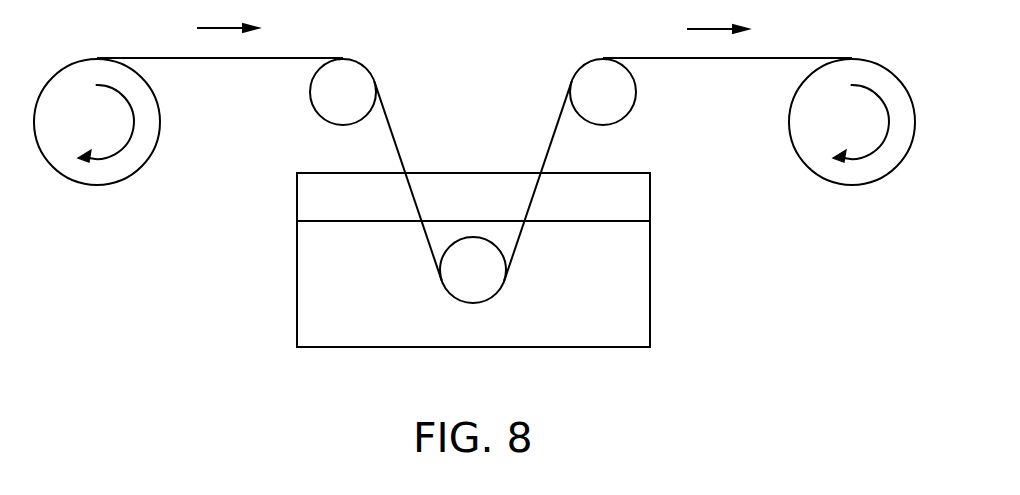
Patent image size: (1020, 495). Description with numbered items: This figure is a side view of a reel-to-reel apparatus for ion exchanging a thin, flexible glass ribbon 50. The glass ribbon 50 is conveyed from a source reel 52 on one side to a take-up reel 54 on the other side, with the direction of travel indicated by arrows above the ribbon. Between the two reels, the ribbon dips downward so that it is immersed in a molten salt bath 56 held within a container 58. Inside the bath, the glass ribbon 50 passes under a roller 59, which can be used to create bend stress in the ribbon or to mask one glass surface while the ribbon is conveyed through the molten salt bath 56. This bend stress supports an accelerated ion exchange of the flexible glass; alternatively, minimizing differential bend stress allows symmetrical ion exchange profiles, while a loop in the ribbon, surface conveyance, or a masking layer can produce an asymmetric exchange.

The glass ribbon 50 is at (387, 109).
The source reel 52 is at (97, 185).
The take-up reel 54 is at (850, 185).
The molten salt bath 56 is at (650, 285).
The container 58 is at (297, 198).
The roller 59 is at (462, 273).